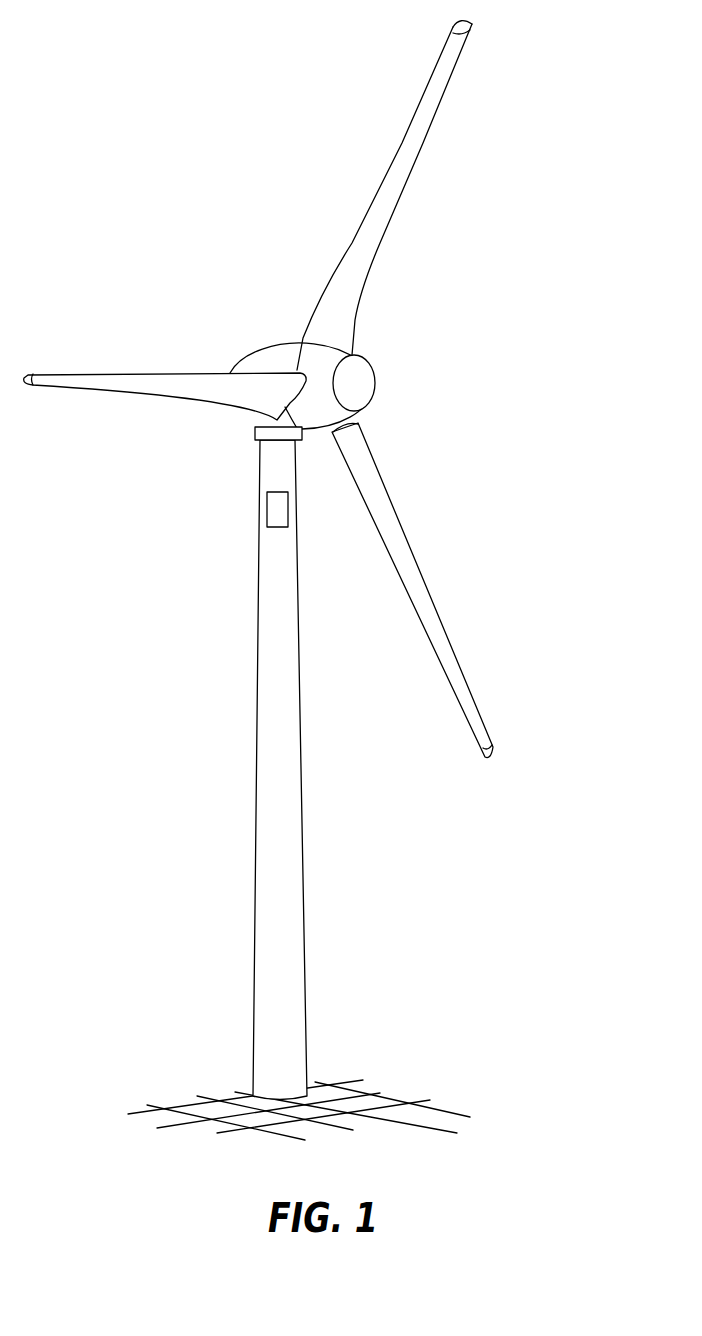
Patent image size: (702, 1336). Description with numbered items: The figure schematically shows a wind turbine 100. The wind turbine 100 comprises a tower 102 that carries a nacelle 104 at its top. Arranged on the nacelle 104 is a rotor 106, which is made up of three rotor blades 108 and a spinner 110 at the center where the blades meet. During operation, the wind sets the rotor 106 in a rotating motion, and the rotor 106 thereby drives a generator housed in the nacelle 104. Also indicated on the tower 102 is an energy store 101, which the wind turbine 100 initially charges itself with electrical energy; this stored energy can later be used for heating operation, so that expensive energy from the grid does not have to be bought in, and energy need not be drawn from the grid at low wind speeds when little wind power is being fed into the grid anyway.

The wind turbine 100 is at (304, 580).
The energy store 101 is at (273, 502).
The tower 102 is at (282, 868).
The nacelle 104 is at (270, 357).
The rotor 106 is at (304, 389).
The rotor blades 108 is at (418, 143).
The spinner 110 is at (357, 383).